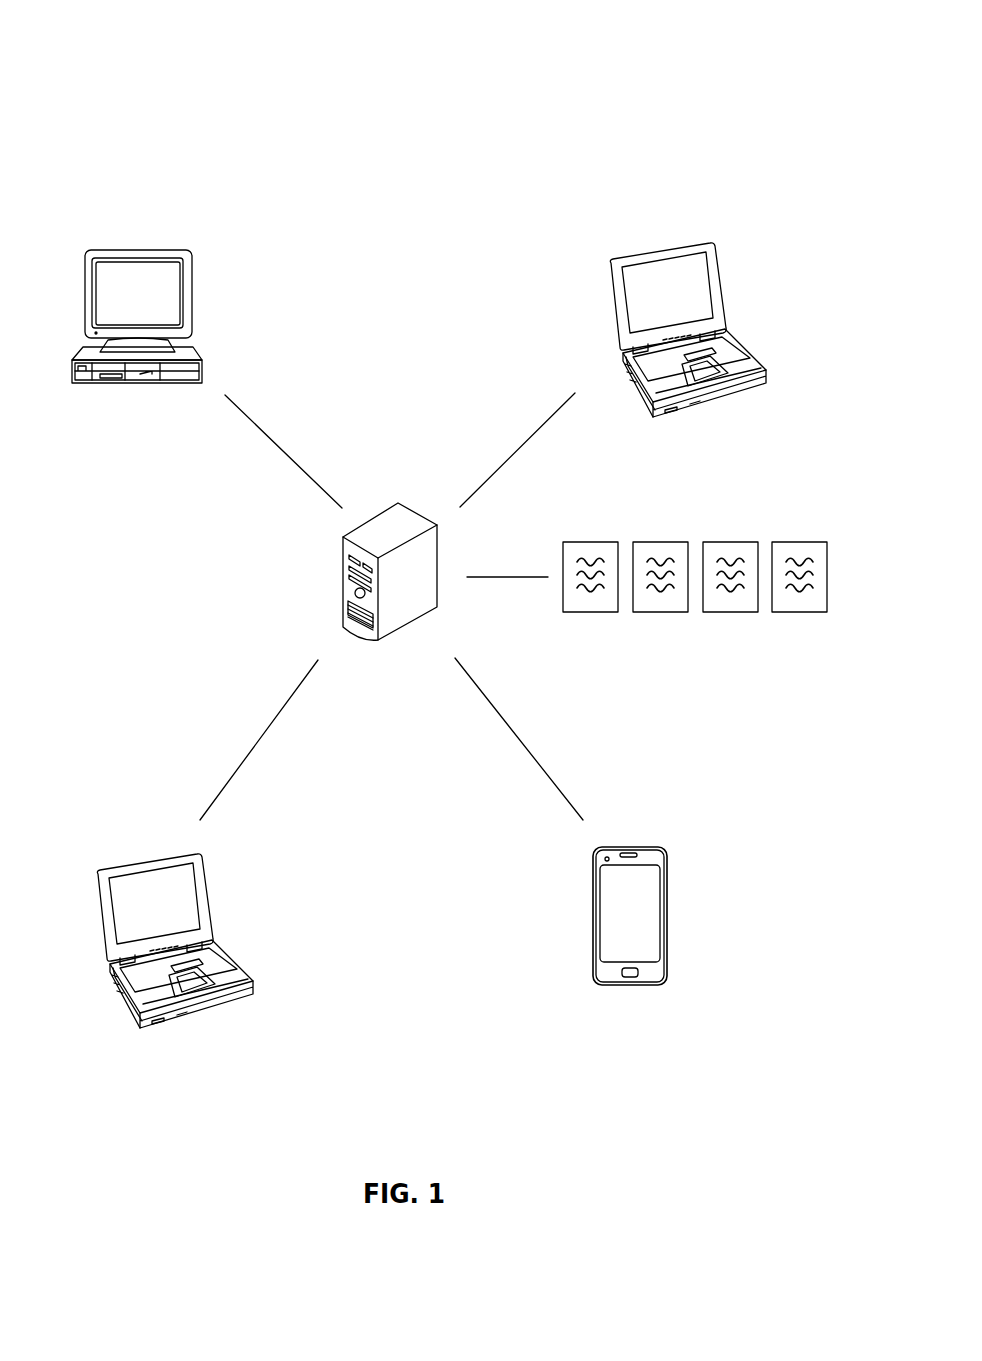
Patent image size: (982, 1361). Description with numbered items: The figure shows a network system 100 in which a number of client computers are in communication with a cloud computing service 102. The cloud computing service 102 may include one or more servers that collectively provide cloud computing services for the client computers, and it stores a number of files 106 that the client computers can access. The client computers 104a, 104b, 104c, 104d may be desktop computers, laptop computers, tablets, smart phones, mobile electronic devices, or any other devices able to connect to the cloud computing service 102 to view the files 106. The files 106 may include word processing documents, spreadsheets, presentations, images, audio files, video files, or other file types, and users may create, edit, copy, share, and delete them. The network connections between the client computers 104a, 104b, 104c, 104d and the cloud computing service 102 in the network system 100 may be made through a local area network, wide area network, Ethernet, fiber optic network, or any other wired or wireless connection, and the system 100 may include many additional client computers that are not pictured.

The network system 100 is at (236, 66).
The cloud computing service 102 is at (400, 500).
The client computer 104a is at (110, 243).
The client computer 104b is at (621, 258).
The client computer 104c is at (108, 869).
The client computer 104d is at (638, 845).
The files 106 is at (693, 525).